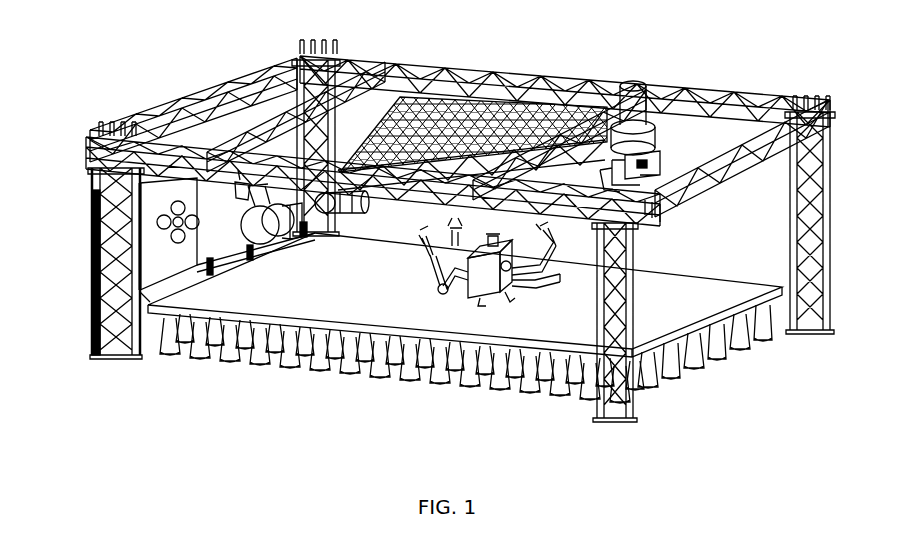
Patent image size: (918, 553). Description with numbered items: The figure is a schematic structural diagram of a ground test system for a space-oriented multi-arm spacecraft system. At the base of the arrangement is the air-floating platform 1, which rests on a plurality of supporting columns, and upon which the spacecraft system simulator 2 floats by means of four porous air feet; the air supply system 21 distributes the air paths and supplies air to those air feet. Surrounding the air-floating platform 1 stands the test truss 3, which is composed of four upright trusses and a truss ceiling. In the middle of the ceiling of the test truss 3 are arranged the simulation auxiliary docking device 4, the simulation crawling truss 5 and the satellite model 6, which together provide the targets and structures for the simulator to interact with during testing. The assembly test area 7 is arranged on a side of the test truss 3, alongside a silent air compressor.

The air-floating platform 1 is at (280, 322).
The spacecraft system simulator 2 is at (481, 220).
The air supply system 21 is at (490, 248).
The test truss 3 is at (240, 88).
The simulation auxiliary docking device 4 is at (297, 210).
The simulation crawling truss 5 is at (447, 117).
The satellite model 6 is at (625, 130).
The assembly test area 7 is at (160, 228).